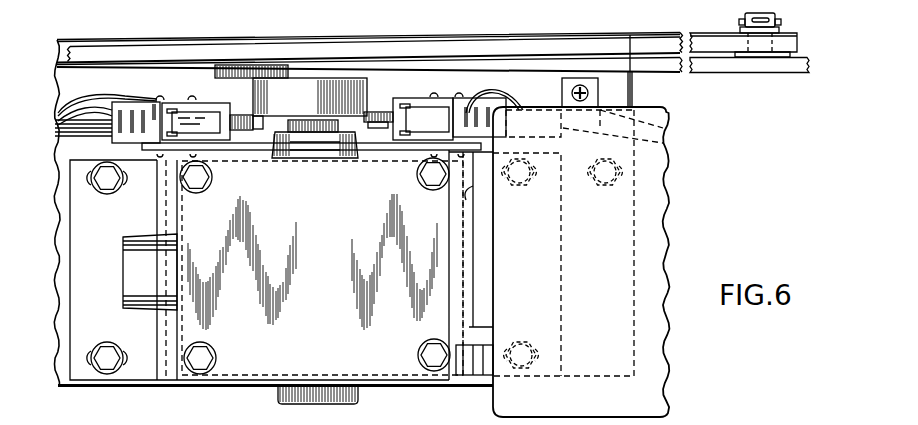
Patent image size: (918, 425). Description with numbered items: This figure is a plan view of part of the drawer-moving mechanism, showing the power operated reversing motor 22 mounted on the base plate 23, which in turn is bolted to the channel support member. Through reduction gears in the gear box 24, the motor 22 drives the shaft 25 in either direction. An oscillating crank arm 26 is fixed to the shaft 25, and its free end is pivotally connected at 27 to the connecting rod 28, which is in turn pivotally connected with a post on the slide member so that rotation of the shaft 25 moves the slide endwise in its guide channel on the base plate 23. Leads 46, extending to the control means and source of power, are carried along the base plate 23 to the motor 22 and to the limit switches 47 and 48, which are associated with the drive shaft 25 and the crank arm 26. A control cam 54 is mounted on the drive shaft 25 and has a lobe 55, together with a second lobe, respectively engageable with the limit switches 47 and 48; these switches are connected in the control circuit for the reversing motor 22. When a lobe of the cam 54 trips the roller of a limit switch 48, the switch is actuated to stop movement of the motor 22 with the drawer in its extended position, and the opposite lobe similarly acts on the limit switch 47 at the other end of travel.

The reversing motor 22 is at (665, 210).
The base plate 23 is at (67, 300).
The gear box 24 is at (285, 337).
The shaft 25 is at (305, 123).
The oscillating crank arm 26 is at (518, 66).
The pivotal connection 27 is at (745, 13).
The connecting rod 28 is at (663, 43).
The leads 46 is at (78, 128).
The limit switch 47 is at (148, 107).
The limit switch 48 is at (416, 102).
The control cam 54 is at (292, 117).
The cam lobe 55 is at (385, 110).